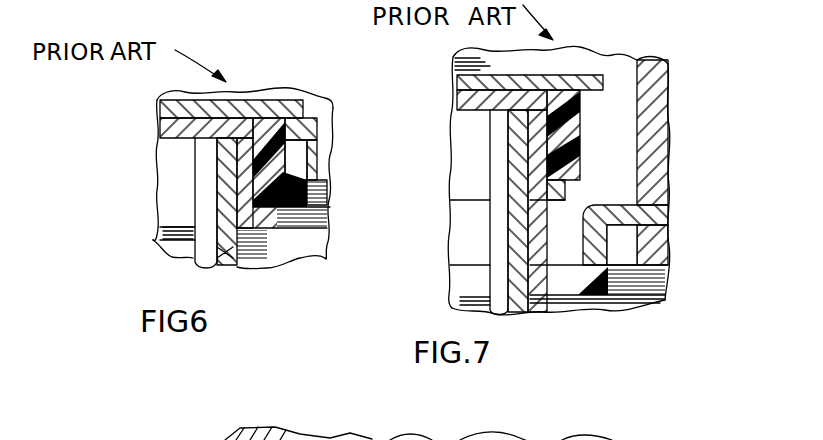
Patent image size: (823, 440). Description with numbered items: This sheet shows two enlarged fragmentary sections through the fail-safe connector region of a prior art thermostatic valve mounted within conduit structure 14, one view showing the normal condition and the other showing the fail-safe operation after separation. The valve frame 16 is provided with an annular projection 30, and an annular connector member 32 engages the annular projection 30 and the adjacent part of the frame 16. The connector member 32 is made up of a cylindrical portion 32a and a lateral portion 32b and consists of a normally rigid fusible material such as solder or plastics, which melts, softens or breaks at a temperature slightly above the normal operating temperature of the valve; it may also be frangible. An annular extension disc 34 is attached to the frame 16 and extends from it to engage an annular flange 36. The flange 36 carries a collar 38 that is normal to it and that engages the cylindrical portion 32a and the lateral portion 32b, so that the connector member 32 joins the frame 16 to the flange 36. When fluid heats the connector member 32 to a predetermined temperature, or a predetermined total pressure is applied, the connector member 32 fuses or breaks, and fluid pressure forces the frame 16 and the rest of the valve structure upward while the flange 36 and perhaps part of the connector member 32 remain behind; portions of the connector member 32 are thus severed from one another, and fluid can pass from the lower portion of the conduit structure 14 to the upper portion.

In FIG. 7, the conduit structure 14 is at (650, 103).
In FIG. 6, the frame 16 is at (190, 236).
In FIG. 7, the frame 16 is at (490, 286).
In FIG. 6, the annular projection 30 is at (300, 232).
In FIG. 7, the annular projection 30 is at (534, 198).
In FIG. 6, the connector member 32 is at (310, 226).
In FIG. 6, the cylindrical portion 32a is at (290, 128).
In FIG. 7, the cylindrical portion 32a is at (588, 112).
In FIG. 6, the lateral portion 32b is at (314, 196).
In FIG. 7, the lateral portion 32b is at (578, 280).
In FIG. 6, the extension disc 34 is at (270, 112).
In FIG. 7, the extension disc 34 is at (585, 113).
In FIG. 6, the flange 36 is at (322, 151).
In FIG. 7, the flange 36 is at (645, 219).
In FIG. 6, the collar 38 is at (326, 203).
In FIG. 7, the collar 38 is at (595, 248).